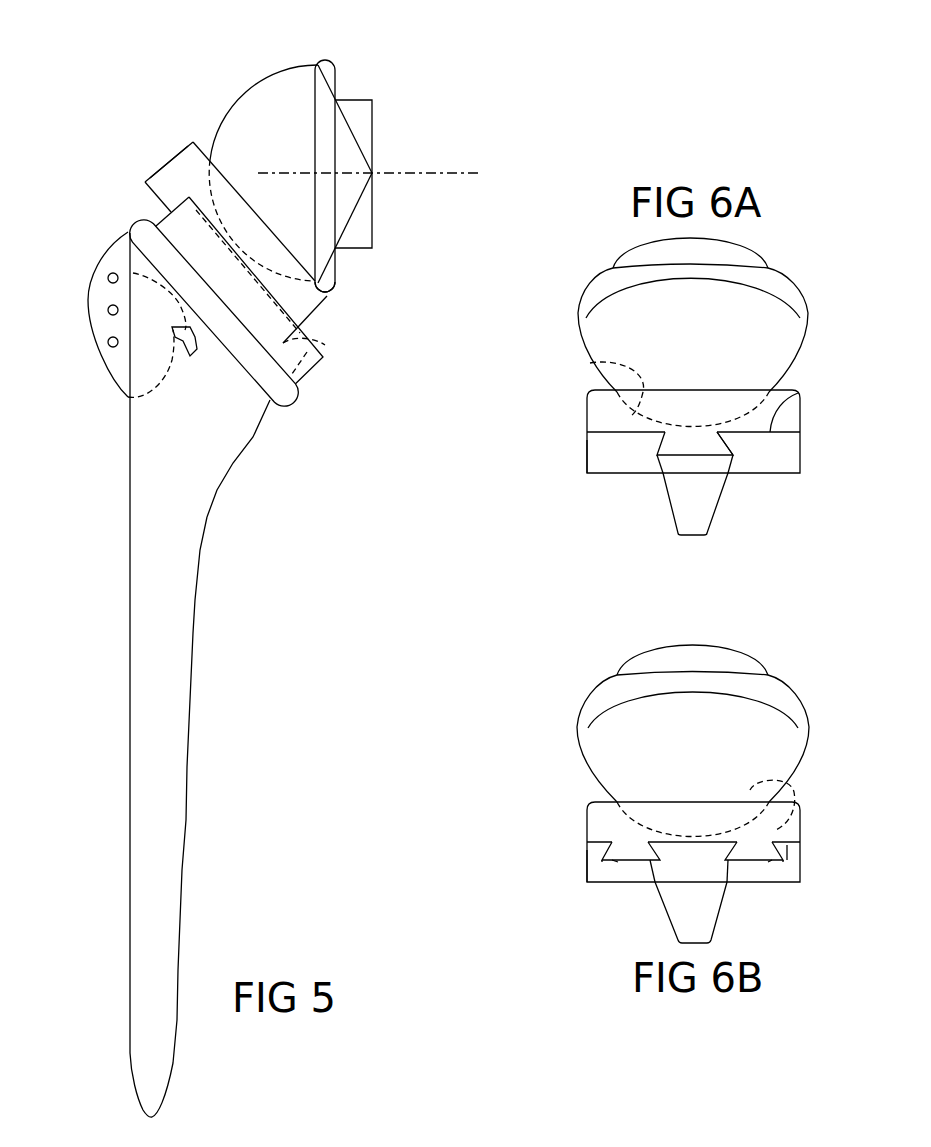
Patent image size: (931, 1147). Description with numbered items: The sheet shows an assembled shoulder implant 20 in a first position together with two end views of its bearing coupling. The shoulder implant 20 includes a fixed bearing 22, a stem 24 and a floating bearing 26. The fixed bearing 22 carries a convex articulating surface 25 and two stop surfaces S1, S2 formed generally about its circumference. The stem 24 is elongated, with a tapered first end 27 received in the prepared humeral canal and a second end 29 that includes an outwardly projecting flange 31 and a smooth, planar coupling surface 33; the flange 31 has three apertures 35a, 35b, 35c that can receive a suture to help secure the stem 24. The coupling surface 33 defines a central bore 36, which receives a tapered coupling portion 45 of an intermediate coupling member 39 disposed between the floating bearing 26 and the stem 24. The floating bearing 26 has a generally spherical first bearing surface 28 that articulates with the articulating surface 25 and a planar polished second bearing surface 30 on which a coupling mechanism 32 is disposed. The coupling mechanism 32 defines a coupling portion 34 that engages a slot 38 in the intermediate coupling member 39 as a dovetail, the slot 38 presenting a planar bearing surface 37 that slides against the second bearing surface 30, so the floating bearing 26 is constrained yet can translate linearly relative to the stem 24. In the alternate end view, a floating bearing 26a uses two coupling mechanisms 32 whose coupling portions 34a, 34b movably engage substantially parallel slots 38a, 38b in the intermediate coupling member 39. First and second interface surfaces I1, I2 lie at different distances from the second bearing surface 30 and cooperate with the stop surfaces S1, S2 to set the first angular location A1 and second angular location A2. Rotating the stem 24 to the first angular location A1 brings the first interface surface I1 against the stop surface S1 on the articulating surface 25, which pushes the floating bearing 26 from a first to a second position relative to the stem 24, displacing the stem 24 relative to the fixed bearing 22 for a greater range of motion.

In FIG. 5, the shoulder implant 20 is at (248, 458).
In FIG. 6A, the shoulder implant 20 is at (571, 334).
In FIG. 6B, the shoulder implant 20 is at (572, 741).
In FIG. 5, the fixed bearing 22 is at (283, 67).
In FIG. 6A, the fixed bearing 22 is at (820, 328).
In FIG. 6B, the fixed bearing 22 is at (816, 738).
In FIG. 5, the stem 24 is at (129, 543).
In FIG. 5, the articulating surface 25 is at (265, 107).
In FIG. 6A, the articulating surface 25 is at (778, 355).
In FIG. 6B, the articulating surface 25 is at (770, 755).
In FIG. 5, the floating bearing 26 is at (127, 120).
In FIG. 6A, the floating bearing 26a is at (586, 412).
In FIG. 6B, the floating bearing 26a is at (586, 822).
In FIG. 5, the first end 27 is at (172, 842).
In FIG. 5, the first bearing surface 28 is at (175, 137).
In FIG. 6A, the first bearing surface 28 is at (592, 364).
In FIG. 6B, the first bearing surface 28 is at (780, 787).
In FIG. 5, the second end 29 is at (270, 400).
In FIG. 5, the second bearing surface 30 is at (160, 199).
In FIG. 6A, the second bearing surface 30 is at (667, 458).
In FIG. 6B, the second bearing surface 30 is at (603, 861).
In FIG. 5, the flange 31 is at (95, 372).
In FIG. 5, the coupling mechanism 32 is at (146, 187).
In FIG. 6A, the coupling mechanism 32 is at (680, 457).
In FIG. 6B, the coupling mechanism 32 is at (618, 863).
In FIG. 5, the coupling surface 33 is at (293, 392).
In FIG. 5, the coupling portion 34 is at (170, 207).
In FIG. 6A, the coupling portion 34 is at (665, 442).
In FIG. 6B, the coupling portion 34a is at (608, 850).
In FIG. 6B, the coupling portion 34b is at (772, 847).
In FIG. 5, the aperture 35a is at (108, 343).
In FIG. 5, the aperture 35b is at (108, 311).
In FIG. 5, the aperture 35c is at (108, 280).
In FIG. 5, the bore 36 is at (128, 398).
In FIG. 5, the planar bearing surface 37 is at (325, 345).
In FIG. 6A, the planar bearing surface 37 is at (800, 394).
In FIG. 6B, the planar bearing surface 37 is at (787, 845).
In FIG. 5, the slot 38 is at (320, 365).
In FIG. 6A, the slot 38 is at (735, 456).
In FIG. 6B, the slot 38a is at (650, 857).
In FIG. 6B, the slot 38b is at (718, 852).
In FIG. 6A, the intermediate coupling member 39 is at (587, 465).
In FIG. 6B, the intermediate coupling member 39 is at (587, 872).
In FIG. 5, the coupling portion 45 is at (133, 273).
In FIG. 6A, the coupling portion 45 is at (670, 513).
In FIG. 6B, the coupling portion 45 is at (715, 913).
In FIG. 5, the stop surface S1 is at (322, 285).
In FIG. 6A, the stop surface S1 is at (787, 290).
In FIG. 6B, the stop surface S1 is at (787, 697).
In FIG. 5, the stop surface S2 is at (322, 63).
In FIG. 6A, the stop surface S2 is at (612, 283).
In FIG. 6B, the stop surface S2 is at (612, 693).
In FIG. 5, the first interface surface I1 is at (325, 300).
In FIG. 5, the second interface surface I2 is at (195, 143).
In FIG. 5, the first angular location A1 is at (348, 202).
In FIG. 5, the second angular location A2 is at (348, 153).